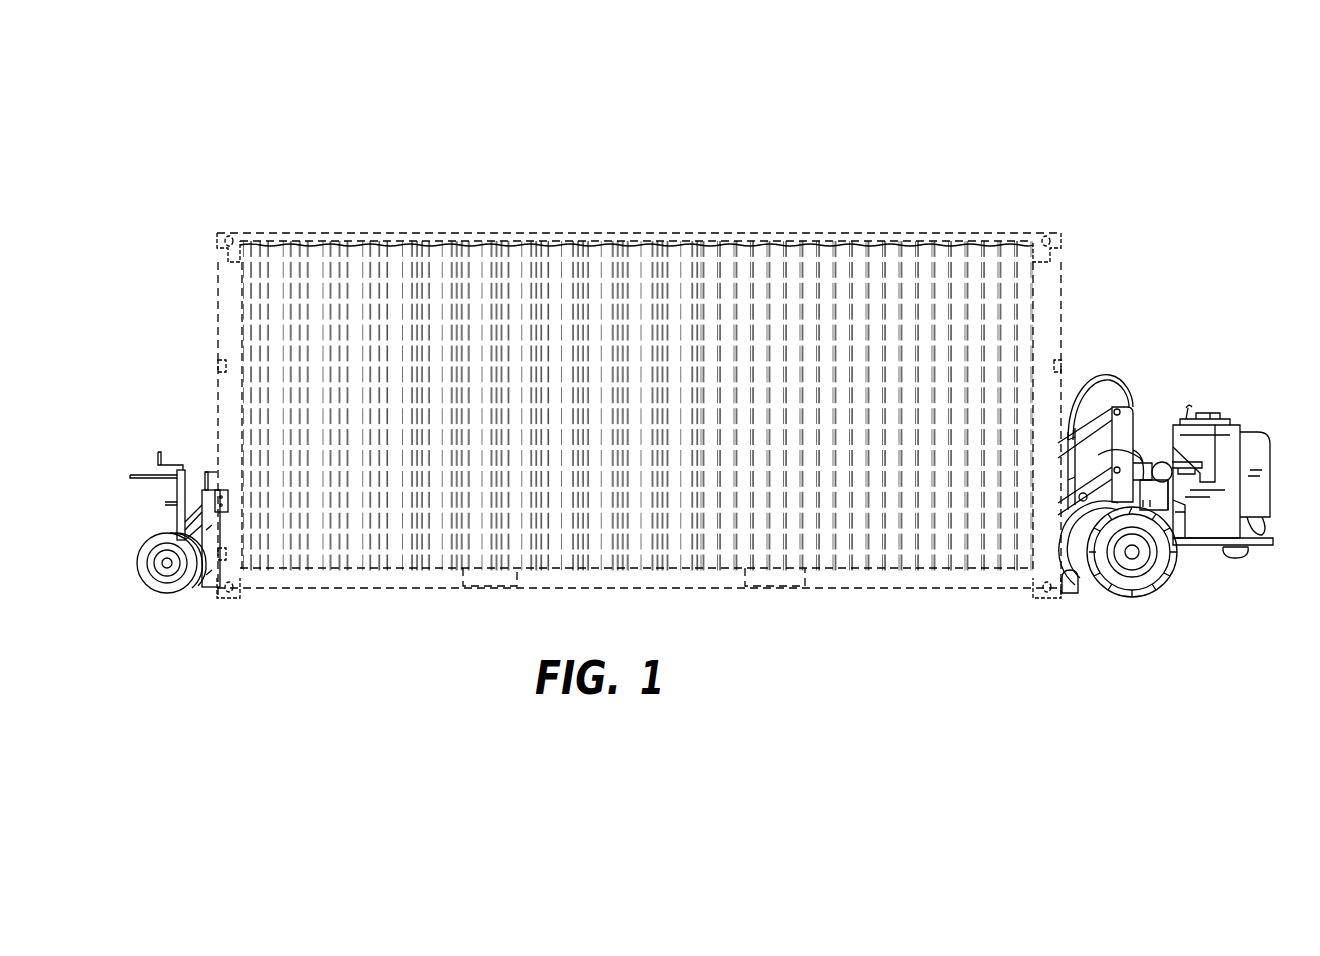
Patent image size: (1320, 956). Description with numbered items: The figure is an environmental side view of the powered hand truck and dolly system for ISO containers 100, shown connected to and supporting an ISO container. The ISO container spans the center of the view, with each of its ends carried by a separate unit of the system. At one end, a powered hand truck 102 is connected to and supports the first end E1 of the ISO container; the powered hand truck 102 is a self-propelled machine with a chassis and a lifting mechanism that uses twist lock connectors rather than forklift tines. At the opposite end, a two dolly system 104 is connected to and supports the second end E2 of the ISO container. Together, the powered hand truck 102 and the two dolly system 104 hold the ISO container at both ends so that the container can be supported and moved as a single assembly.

The powered hand truck and dolly system for ISO containers 100 is at (985, 112).
The ISO container ISO is at (597, 234).
The first end of the ISO container E1 is at (1064, 265).
The second end of the ISO container E2 is at (210, 258).
The powered hand truck 102 is at (1182, 352).
The two dolly system 104 is at (153, 405).